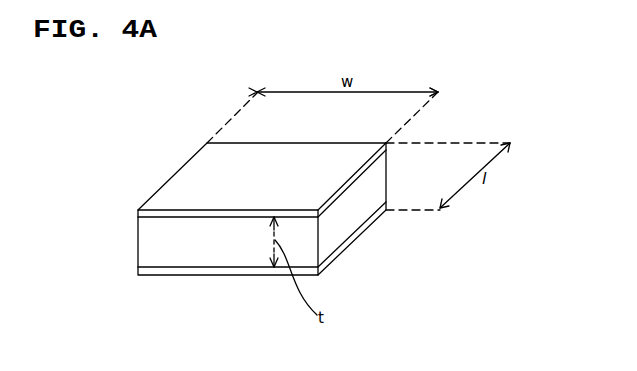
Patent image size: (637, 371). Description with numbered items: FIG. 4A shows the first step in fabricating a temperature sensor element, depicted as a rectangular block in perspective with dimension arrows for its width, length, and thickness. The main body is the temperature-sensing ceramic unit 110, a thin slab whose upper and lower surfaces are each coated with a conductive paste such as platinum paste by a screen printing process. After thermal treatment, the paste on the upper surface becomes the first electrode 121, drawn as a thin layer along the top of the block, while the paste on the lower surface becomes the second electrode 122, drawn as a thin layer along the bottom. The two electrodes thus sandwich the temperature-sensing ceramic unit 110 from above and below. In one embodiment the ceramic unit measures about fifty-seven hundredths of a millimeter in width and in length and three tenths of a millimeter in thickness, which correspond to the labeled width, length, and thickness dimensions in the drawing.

The temperature-sensing ceramic unit 110 is at (145, 248).
The first electrode 121 is at (140, 213).
The second electrode 122 is at (170, 270).